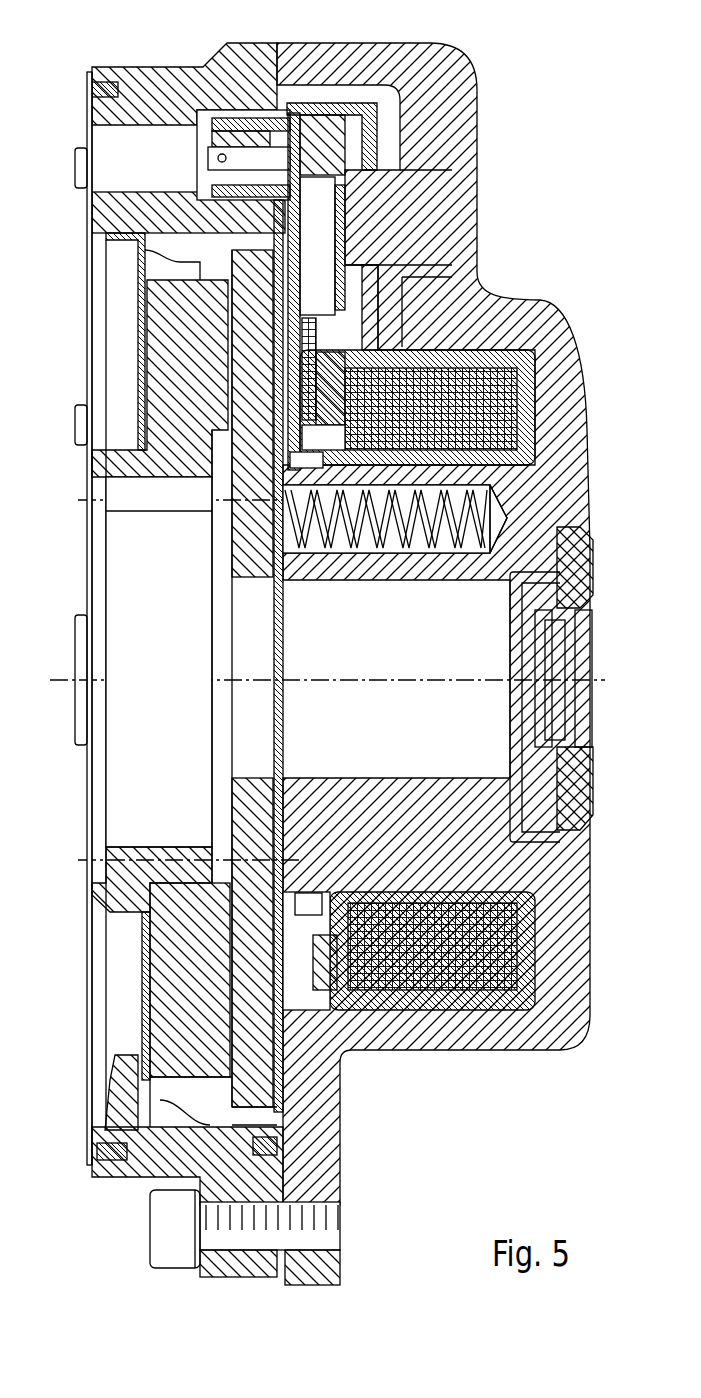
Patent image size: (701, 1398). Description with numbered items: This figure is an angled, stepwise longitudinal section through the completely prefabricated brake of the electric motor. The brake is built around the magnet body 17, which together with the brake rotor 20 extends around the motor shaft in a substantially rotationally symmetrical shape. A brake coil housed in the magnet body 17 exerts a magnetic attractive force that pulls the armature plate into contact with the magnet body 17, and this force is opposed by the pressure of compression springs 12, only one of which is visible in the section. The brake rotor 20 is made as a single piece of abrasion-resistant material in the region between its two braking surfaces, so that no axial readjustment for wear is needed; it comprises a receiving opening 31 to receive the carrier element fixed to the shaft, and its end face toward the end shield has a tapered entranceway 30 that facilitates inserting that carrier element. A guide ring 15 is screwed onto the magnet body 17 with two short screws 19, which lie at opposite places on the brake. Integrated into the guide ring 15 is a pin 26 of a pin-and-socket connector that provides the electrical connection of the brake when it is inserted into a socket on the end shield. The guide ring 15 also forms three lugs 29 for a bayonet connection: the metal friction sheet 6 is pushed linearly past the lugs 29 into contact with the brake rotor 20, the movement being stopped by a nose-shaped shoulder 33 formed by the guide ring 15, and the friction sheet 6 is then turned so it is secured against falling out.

The friction sheet 6 is at (146, 1010).
The compression spring 12 is at (355, 550).
The guide ring 15 is at (260, 1178).
The magnet body 17 is at (580, 865).
The short screw 19 is at (236, 1262).
The brake rotor 20 is at (182, 958).
The pin 26 is at (200, 128).
The lug 29 is at (122, 1078).
The tapered entranceway 30 is at (97, 890).
The receiving opening 31 is at (112, 545).
The shoulder 33 is at (150, 250).